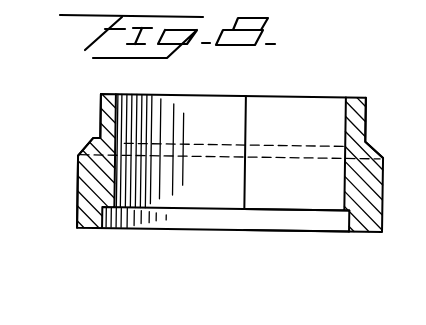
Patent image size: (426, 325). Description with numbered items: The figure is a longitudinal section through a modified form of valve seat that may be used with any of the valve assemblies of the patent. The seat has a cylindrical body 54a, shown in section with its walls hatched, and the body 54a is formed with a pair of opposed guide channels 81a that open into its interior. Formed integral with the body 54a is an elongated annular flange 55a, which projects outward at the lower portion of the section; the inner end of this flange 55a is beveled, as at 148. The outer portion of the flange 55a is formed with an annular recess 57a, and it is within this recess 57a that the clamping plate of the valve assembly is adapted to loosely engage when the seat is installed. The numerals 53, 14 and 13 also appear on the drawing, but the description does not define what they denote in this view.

The cap body 14 is at (246, 163).
The flange lip 13 is at (417, 243).
The cylindrical body 54a is at (365, 115).
The bevel 148 is at (92, 143).
The elongated annular flange 55a is at (78, 173).
The threaded bore 53 is at (185, 198).
The annular recess 57a is at (313, 222).
The guide channels 81a is at (246, 106).